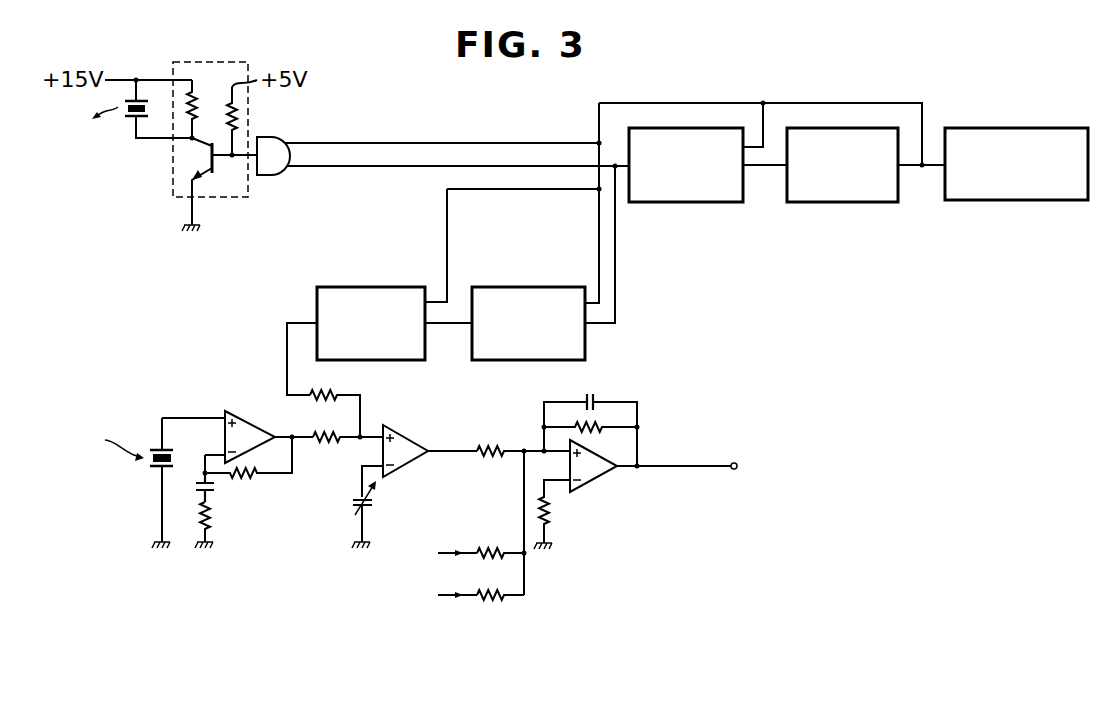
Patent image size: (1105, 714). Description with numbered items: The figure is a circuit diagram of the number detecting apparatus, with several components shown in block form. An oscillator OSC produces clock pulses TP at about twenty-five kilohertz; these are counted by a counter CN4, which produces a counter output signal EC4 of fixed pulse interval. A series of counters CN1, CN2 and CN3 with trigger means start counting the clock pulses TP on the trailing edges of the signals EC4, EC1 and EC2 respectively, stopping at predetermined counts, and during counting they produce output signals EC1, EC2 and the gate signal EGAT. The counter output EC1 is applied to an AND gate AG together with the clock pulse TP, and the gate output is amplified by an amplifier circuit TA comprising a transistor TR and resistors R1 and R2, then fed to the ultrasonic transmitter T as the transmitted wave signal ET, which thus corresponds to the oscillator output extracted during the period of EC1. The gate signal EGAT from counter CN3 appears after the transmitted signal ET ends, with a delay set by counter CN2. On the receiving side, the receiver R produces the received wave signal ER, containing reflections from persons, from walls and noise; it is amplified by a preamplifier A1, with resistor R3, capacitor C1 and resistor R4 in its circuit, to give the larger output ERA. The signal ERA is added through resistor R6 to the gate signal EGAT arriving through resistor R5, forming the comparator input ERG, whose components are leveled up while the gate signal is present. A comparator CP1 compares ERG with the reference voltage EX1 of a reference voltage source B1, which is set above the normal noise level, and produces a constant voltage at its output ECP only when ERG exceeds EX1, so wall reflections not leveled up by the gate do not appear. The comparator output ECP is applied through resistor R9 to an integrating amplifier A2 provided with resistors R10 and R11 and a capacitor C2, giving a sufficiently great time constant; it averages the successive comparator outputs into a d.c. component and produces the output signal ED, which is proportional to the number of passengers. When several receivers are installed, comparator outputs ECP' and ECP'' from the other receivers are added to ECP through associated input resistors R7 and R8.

The transmitter T is at (142, 116).
The amplifier circuit TA is at (215, 62).
The resistor R1 is at (197, 117).
The resistor R2 is at (237, 116).
The transmitted wave signal ET is at (150, 140).
The transistor TR is at (200, 171).
The AND gate AG is at (275, 175).
The counter CN1 is at (672, 202).
The counter CN2 is at (528, 287).
The counter CN3 is at (378, 287).
The counter CN4 is at (840, 202).
The counter output signal EC1 is at (615, 288).
The counter output signal EC2 is at (440, 325).
The counter output signal EC4 is at (762, 167).
The clock pulses TP is at (905, 167).
The oscillator OSC is at (1020, 200).
The gate signal EGAT is at (287, 345).
The resistor R5 is at (330, 393).
The receiver R is at (150, 464).
The received wave signal ER is at (190, 417).
The preamplifier A1 is at (256, 425).
The preamplifier output ERA is at (293, 436).
The resistor R6 is at (328, 442).
The resistor R3 is at (250, 480).
The capacitor C1 is at (214, 488).
The resistor R4 is at (211, 526).
The reference voltage EX1 is at (353, 490).
The reference voltage source B1 is at (367, 507).
The comparator CP1 is at (414, 459).
The comparator input ERG is at (362, 436).
The comparator output ECP is at (457, 428).
The resistor R9 is at (491, 456).
The comparator output ECP' is at (458, 534).
The input resistor R7 is at (494, 558).
The comparator output ECP'' is at (463, 618).
The input resistor R8 is at (500, 600).
The integrating amplifier A2 is at (602, 477).
The resistor R11 is at (600, 431).
The capacitor C2 is at (596, 400).
The resistor R10 is at (549, 515).
The output signal ED is at (690, 468).